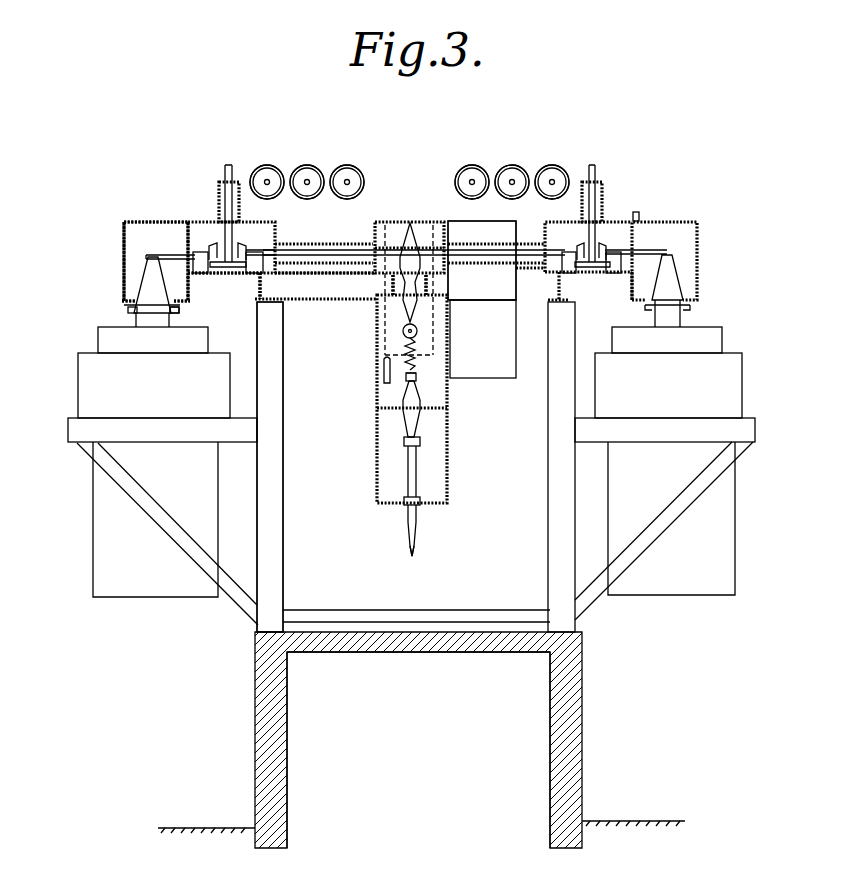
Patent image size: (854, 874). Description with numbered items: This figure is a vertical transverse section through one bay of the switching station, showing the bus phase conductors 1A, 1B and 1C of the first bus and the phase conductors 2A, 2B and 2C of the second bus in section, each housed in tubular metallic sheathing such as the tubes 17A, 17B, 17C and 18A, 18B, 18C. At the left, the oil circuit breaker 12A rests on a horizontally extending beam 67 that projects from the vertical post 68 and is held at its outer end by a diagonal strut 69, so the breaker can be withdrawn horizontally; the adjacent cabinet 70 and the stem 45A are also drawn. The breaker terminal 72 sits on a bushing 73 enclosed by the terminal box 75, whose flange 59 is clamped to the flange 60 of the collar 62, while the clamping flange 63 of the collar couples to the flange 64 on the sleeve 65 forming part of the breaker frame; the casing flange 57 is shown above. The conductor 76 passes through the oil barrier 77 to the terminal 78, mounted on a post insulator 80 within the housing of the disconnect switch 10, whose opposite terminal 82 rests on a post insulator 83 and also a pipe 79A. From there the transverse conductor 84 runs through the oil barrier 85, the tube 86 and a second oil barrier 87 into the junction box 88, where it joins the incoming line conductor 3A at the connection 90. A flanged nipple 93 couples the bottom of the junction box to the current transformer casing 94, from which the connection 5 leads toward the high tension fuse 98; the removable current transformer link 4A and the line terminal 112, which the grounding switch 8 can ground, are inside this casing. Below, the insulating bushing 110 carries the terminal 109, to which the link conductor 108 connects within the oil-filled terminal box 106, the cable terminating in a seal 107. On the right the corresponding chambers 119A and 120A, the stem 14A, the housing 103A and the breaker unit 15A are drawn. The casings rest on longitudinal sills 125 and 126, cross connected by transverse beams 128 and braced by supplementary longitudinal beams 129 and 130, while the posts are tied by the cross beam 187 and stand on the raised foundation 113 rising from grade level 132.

The phase conductor 1A is at (267, 180).
The phase conductor 1B is at (307, 180).
The phase conductor 1C is at (347, 180).
The tube 17A is at (258, 173).
The tube 17B is at (320, 172).
The tube 17C is at (360, 172).
The phase conductor 2A is at (472, 181).
The phase conductor 2B is at (512, 180).
The phase conductor 2C is at (552, 180).
The tube 18A is at (455, 180).
The tube 18B is at (496, 176).
The tube 18C is at (537, 176).
The valve stem 45A is at (222, 184).
The flange 57 is at (184, 232).
The conductor 76 is at (160, 250).
The oil barrier 77 is at (184, 242).
The terminal 78 is at (206, 246).
The terminal box 75 is at (122, 236).
The terminal 82 is at (252, 250).
The outlet pipe 79A is at (266, 250).
The oil barrier 85 is at (282, 243).
The conductor 84 is at (320, 250).
The oil barrier 87 is at (470, 238).
The junction box 88 is at (384, 222).
The connection 90 is at (410, 240).
The right valve chamber 119A is at (557, 222).
The right valve stem 14A is at (614, 203).
The right chamber 120A is at (698, 222).
The terminal 72 is at (146, 257).
The bushing 73 is at (150, 274).
The clamping flange 59 is at (122, 298).
The clamping flange 63 is at (128, 310).
The flange 64 is at (130, 316).
The sleeve 65 is at (130, 327).
The post insulator 80 is at (200, 266).
The disconnect switch 10 is at (228, 268).
The flange 60 is at (186, 305).
The collar 62 is at (180, 311).
The longitudinal sill 125 is at (258, 296).
The post insulator 83 is at (274, 278).
The tube 86 is at (326, 266).
The supplementary longitudinal beam 129 is at (372, 274).
The transverse beam 128 is at (281, 467).
The flanged nipple 93 is at (394, 298).
The high tension fuse 98 is at (442, 286).
The supplementary longitudinal beam 130 is at (516, 268).
The longitudinal sill 126 is at (565, 296).
The right base unit 15A is at (730, 327).
The oil circuit breaker 12A is at (78, 378).
The horizontally extending beam 67 is at (72, 425).
The cabinet 70 is at (93, 509).
The diagonal strut 69 is at (166, 516).
The post 68 is at (276, 466).
The connection 5 is at (418, 330).
The current transformer casing 94 is at (376, 346).
The grounding switch 8 is at (383, 366).
The removable current transformer link 4A is at (420, 356).
The line terminal 112 is at (404, 380).
The insulating bushing 110 is at (420, 402).
The side housing 103A is at (503, 376).
The terminal 109 is at (404, 441).
The terminal box 106 is at (450, 452).
The link conductor 108 is at (418, 470).
The seal 107 is at (407, 518).
The incoming line conductor 3A is at (416, 556).
The cross beam 187 is at (478, 610).
The raised foundation 113 is at (583, 700).
The grade level 132 is at (648, 820).